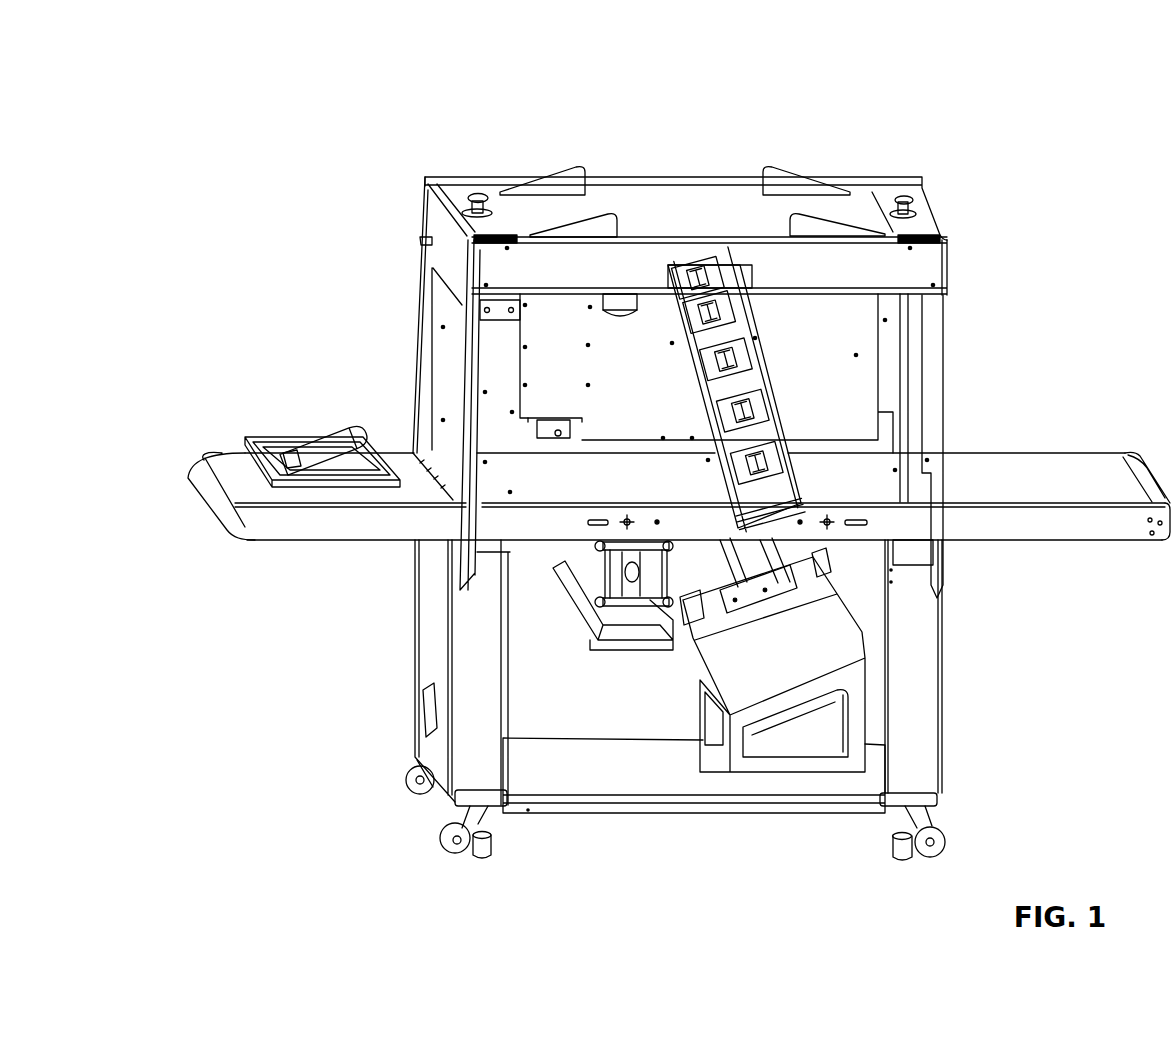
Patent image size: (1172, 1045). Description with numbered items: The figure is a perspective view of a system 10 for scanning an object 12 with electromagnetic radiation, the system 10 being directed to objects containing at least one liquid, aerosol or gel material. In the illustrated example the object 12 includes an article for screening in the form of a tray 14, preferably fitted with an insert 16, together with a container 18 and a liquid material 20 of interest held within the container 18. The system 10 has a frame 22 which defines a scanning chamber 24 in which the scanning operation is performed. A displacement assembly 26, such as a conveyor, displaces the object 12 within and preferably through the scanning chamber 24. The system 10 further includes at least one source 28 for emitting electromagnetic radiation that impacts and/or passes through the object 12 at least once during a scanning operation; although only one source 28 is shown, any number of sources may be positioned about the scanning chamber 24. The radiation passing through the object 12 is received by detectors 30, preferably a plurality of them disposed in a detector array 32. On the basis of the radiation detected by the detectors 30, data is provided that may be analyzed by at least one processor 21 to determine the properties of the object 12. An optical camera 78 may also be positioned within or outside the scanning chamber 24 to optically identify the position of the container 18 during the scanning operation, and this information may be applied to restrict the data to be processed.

The system 10 is at (977, 148).
The object 12 is at (647, 486).
The tray 14 is at (360, 490).
The insert 16 is at (268, 444).
The container 18 is at (350, 430).
The liquid material 20 is at (281, 414).
The processor 21 is at (558, 438).
The frame 22 is at (928, 267).
The scanning chamber 24 is at (457, 356).
The displacement assembly 26 is at (258, 528).
The source 28 is at (865, 628).
The detector 30 is at (782, 437).
The detector array 32 is at (758, 317).
The optical camera 78 is at (630, 300).